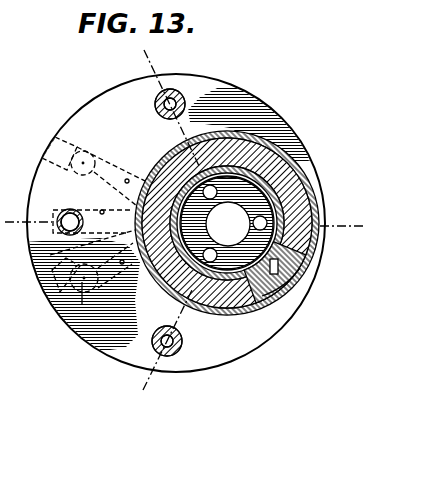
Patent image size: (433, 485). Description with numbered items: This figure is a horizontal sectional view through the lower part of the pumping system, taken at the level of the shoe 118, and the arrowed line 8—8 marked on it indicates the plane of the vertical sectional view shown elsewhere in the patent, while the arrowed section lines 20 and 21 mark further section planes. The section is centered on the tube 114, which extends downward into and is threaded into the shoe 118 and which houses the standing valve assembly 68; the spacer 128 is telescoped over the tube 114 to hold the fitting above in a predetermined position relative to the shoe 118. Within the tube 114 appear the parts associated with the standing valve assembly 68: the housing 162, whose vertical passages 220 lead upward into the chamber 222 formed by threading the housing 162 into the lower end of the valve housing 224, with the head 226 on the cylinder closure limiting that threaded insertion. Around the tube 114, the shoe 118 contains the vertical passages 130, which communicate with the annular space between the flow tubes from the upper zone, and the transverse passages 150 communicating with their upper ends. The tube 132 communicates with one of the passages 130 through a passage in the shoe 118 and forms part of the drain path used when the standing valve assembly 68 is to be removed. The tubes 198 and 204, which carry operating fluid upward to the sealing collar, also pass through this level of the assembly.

The plane of vertical sectional view 8 is at (13, 222).
The section line 20- 20 is at (148, 380).
The section line 21- 21 is at (150, 63).
The standing valve assembly 68 is at (312, 162).
The tube 114 is at (298, 193).
The shoe 118 is at (95, 348).
The spacer 128 is at (272, 130).
The vertical passages 130 is at (92, 158).
The tube 132 is at (69, 235).
The transverse passages 150 is at (127, 179).
The housing 162 is at (279, 268).
The tube 198 is at (181, 356).
The tube 204 is at (186, 99).
The vertical passages 220 is at (216, 190).
The chamber 222 is at (286, 302).
The valve housing 224 is at (288, 291).
The head 226 is at (240, 233).